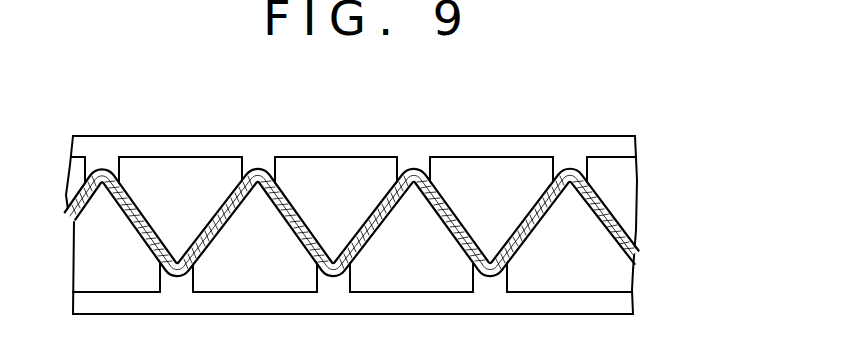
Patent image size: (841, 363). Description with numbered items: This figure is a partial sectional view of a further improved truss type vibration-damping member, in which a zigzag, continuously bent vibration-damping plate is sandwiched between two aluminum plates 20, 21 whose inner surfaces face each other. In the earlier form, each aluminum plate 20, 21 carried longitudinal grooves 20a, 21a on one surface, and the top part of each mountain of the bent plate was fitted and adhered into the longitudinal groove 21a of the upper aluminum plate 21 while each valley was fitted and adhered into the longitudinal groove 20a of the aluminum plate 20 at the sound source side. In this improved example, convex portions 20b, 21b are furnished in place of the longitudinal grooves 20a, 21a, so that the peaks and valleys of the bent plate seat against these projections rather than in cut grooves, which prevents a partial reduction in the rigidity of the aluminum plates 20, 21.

The aluminum plate 20 is at (605, 306).
The longitudinal groove 20a is at (487, 258).
The convex portion 20b is at (507, 279).
The aluminum plate 21 is at (514, 146).
The longitudinal groove 21a is at (285, 196).
The convex portion 21b is at (588, 164).